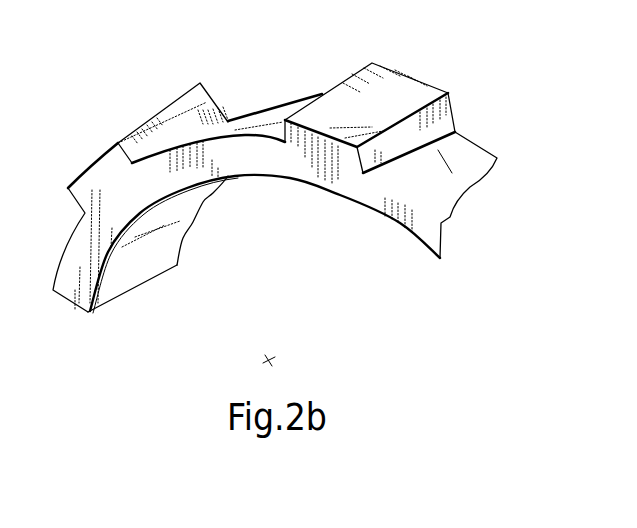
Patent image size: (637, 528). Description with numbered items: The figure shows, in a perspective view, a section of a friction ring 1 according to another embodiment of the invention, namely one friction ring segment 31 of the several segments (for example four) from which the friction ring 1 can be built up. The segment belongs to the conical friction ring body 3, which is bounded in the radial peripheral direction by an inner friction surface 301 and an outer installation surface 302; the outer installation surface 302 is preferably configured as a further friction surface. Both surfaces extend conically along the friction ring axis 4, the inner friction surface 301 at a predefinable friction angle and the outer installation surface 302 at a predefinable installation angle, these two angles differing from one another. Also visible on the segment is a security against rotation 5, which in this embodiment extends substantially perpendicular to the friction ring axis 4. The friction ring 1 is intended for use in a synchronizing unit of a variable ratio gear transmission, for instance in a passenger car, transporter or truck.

The friction ring 1 is at (140, 62).
The conical friction ring body 3 is at (275, 199).
The security against rotation 5 is at (188, 113).
The inner friction surface 301 is at (186, 221).
The outer installation surface 302 is at (452, 173).
The friction ring segment 31 is at (115, 205).
The friction ring axis 4 is at (270, 360).